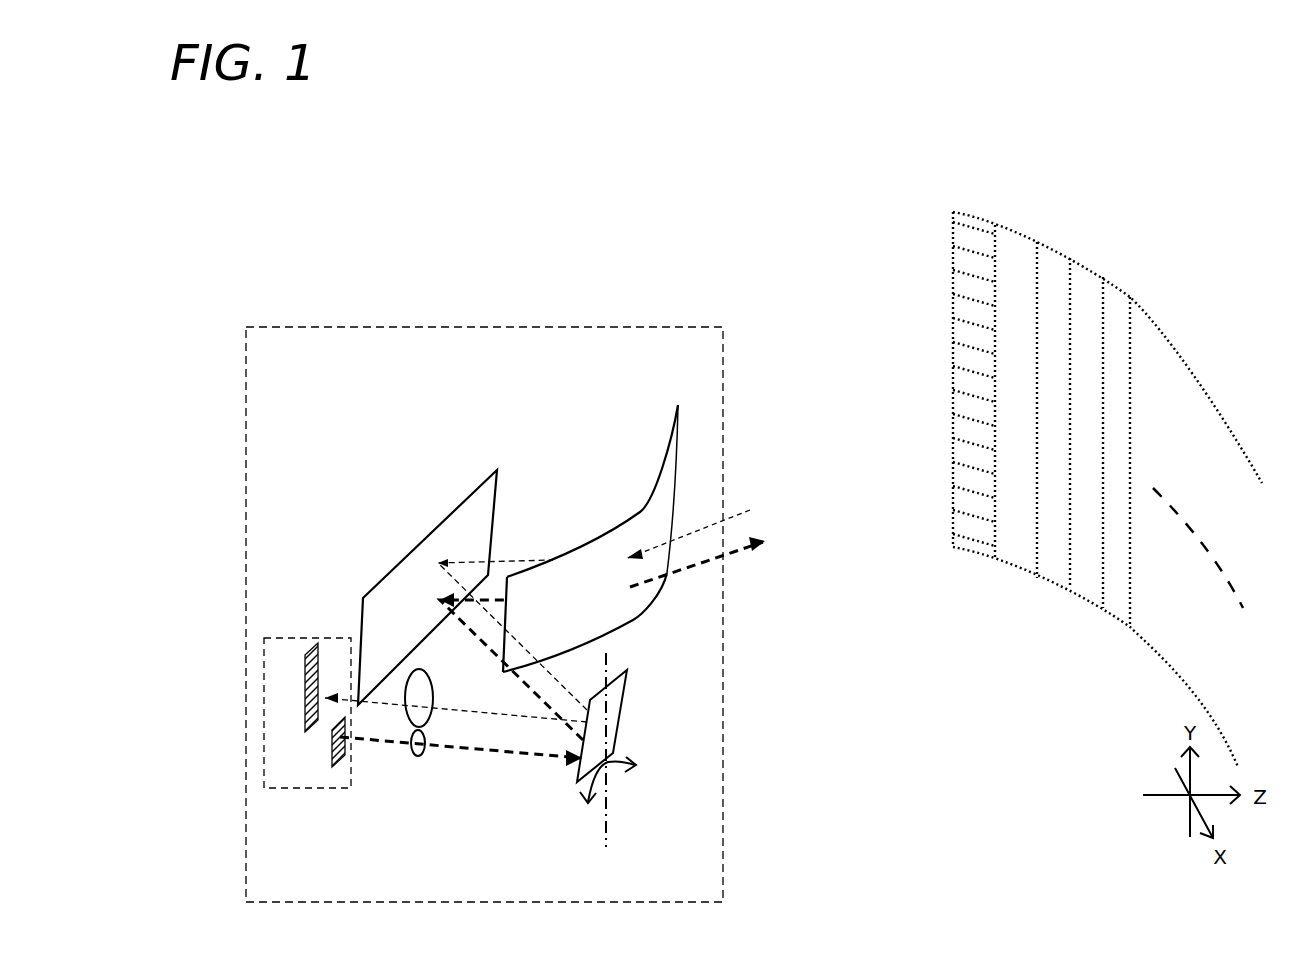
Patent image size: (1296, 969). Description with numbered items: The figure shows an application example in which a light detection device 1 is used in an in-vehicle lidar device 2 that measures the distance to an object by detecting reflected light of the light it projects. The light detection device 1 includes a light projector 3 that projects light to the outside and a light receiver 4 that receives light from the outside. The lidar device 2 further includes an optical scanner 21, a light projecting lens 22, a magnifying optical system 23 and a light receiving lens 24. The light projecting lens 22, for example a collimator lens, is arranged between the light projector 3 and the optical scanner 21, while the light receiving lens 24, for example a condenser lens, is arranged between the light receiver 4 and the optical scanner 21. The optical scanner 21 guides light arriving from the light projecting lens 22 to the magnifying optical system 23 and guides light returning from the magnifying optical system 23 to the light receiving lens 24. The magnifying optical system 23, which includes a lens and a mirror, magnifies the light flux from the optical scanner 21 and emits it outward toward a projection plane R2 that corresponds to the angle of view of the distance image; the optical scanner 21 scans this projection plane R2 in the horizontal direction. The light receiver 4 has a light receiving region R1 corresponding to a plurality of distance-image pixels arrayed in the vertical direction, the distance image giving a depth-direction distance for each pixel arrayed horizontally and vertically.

The light detection device 1 is at (264, 788).
The lidar device 2 is at (327, 327).
The light projector 3 is at (330, 766).
The light receiver 4 is at (307, 668).
The optical scanner 21 is at (578, 772).
The light projecting lens 22 is at (428, 728).
The magnifying optical system 23 is at (670, 385).
The light receiving lens 24 is at (423, 753).
The light receiving region R1 is at (326, 666).
The projection plane R2 is at (1232, 427).